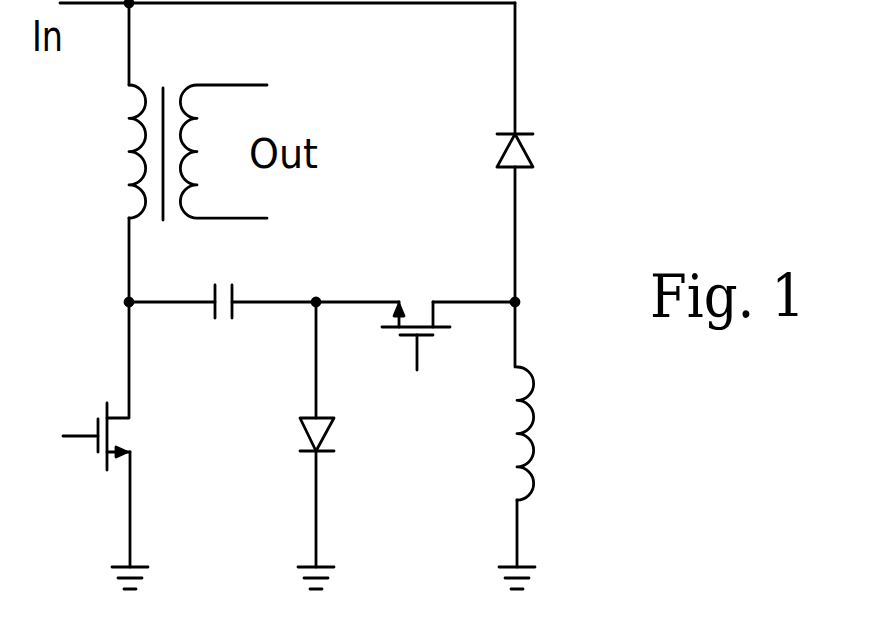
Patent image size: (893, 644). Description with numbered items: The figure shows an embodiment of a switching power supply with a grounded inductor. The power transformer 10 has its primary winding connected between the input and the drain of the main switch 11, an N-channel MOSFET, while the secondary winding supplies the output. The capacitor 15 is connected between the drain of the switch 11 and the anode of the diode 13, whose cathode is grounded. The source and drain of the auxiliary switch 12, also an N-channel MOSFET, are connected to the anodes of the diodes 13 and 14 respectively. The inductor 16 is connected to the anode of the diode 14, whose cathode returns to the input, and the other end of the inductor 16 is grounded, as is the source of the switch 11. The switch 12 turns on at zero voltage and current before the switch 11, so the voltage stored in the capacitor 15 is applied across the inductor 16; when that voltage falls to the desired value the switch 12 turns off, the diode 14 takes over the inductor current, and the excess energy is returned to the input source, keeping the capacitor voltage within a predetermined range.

The power transformer 10 is at (163, 90).
The main switch 11 is at (108, 465).
The auxiliary switch 12 is at (395, 328).
The diode 13 is at (308, 452).
The diode 14 is at (522, 170).
The capacitor 15 is at (233, 310).
The inductor 16 is at (535, 483).